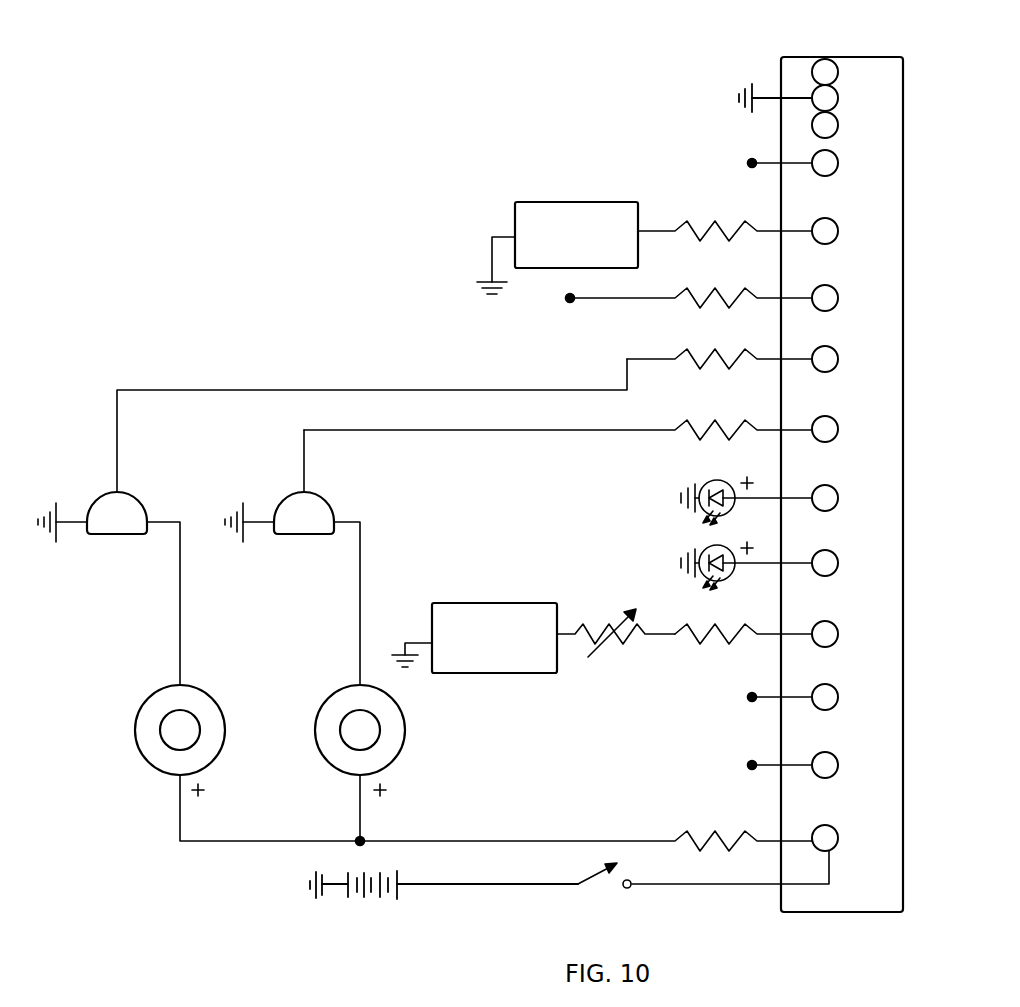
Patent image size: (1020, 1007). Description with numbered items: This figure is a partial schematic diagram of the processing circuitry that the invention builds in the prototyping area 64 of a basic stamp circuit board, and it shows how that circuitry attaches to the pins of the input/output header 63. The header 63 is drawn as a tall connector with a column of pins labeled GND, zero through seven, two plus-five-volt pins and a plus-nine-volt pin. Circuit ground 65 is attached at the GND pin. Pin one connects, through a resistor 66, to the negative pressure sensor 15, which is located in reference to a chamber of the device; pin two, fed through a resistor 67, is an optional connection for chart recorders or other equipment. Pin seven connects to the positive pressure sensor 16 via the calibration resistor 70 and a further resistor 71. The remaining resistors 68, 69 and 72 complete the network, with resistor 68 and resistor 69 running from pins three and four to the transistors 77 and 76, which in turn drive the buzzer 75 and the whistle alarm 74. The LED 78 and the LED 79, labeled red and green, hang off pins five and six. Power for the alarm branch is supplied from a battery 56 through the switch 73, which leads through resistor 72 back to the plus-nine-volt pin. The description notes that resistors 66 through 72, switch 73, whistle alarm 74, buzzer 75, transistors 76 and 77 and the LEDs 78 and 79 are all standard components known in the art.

The negative pressure sensor 15 is at (618, 202).
The positive pressure sensor 16 is at (508, 603).
The battery 56 is at (382, 878).
The input/output header 63 is at (883, 57).
The prototyping area 64 is at (402, 252).
The circuit ground 65 is at (735, 99).
The resistor 66 is at (715, 220).
The resistor 67 is at (715, 288).
The resistor 68 is at (715, 349).
The resistor 69 is at (722, 398).
The calibration resistor 70 is at (600, 622).
The resistor 71 is at (718, 625).
The resistor 72 is at (715, 828).
The switch 73 is at (592, 878).
The whistle alarm 74 is at (405, 742).
The buzzer 75 is at (225, 732).
The transistor 76 is at (330, 500).
The transistor 77 is at (118, 535).
The LED 78 is at (703, 486).
The LED 79 is at (703, 551).